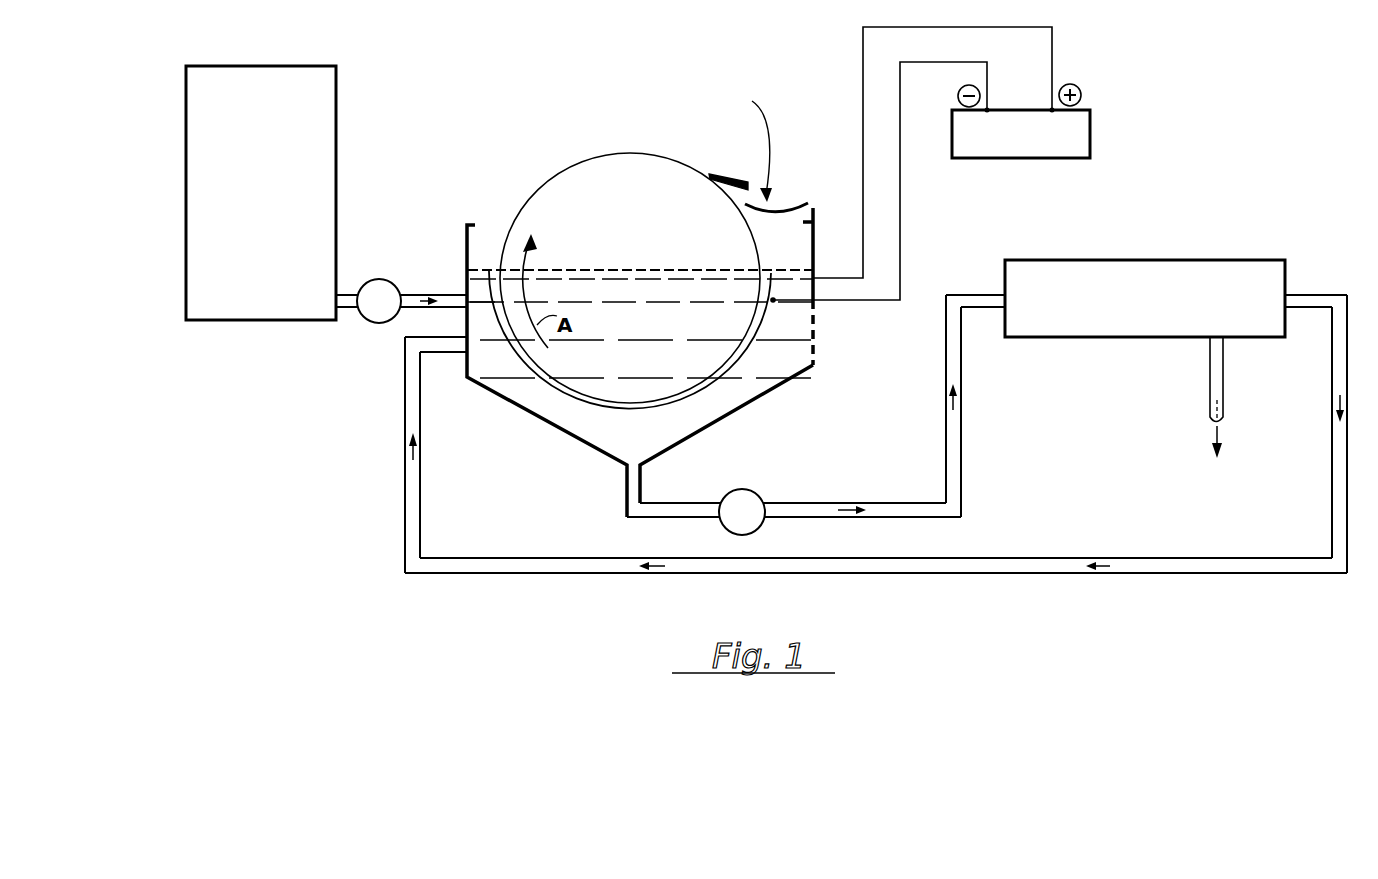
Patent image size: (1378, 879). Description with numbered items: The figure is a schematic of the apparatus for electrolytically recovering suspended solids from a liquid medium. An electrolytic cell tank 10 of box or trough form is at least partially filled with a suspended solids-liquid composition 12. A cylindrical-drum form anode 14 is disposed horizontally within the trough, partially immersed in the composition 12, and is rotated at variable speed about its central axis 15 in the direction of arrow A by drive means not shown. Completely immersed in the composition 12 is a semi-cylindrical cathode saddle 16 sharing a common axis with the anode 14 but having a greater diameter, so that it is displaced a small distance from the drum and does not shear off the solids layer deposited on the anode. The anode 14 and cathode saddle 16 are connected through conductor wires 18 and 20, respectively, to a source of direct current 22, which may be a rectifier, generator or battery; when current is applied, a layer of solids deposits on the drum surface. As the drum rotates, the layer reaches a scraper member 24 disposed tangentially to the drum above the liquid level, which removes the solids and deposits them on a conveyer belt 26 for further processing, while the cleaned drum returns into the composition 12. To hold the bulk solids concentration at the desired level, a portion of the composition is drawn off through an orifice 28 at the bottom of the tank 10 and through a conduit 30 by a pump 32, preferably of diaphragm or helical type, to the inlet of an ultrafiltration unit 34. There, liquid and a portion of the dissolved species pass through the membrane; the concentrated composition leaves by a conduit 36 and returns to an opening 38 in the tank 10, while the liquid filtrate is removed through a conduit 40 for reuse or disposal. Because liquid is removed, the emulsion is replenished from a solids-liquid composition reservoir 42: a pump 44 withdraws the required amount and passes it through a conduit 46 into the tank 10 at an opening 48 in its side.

The electrolytic cell tank 10 is at (763, 397).
The suspended solids-liquid composition 12 is at (784, 345).
The cylindrical-drum form anode 14 is at (589, 158).
The central axis 15 is at (633, 278).
The semi-cylindrical cathode saddle 16 is at (572, 410).
The conductor wire 18 is at (866, 228).
The conductor wire 20 is at (902, 250).
The source of direct current 22 is at (1092, 122).
The scraper member 24 is at (721, 177).
The conveyer belt 26 is at (788, 205).
The orifice 28 is at (622, 467).
The conduit 30 is at (673, 503).
The pump 32 is at (750, 490).
The ultrafiltration unit 34 is at (1232, 260).
The conduit 36 is at (1335, 460).
The opening 38 is at (465, 354).
The conduit 40 is at (1221, 390).
The solids-liquid composition reservoir 42 is at (261, 193).
The pump 44 is at (379, 278).
The conduit 46 is at (421, 294).
The opening 48 is at (463, 293).